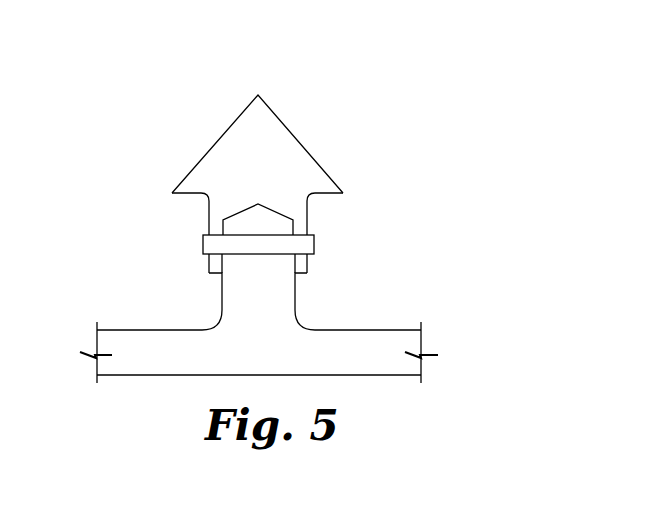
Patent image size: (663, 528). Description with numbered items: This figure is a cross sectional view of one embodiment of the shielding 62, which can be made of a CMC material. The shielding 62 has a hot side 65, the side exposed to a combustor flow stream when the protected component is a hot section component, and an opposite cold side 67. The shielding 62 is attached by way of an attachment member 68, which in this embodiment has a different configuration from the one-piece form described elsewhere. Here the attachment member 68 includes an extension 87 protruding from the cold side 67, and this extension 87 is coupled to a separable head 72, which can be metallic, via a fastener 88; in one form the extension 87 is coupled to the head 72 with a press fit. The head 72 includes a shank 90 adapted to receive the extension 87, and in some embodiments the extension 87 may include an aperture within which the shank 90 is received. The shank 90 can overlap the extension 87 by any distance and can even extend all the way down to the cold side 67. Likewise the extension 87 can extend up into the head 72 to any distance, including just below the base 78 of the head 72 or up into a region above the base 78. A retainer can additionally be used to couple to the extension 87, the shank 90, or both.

The attachment member 68 is at (301, 89).
The head 72 is at (303, 146).
The base 78 is at (179, 196).
The shank 90 is at (308, 217).
The fastener 88 is at (211, 234).
The extension 87 is at (295, 302).
The cold side 67 is at (124, 330).
The shielding 62 is at (333, 376).
The hot side 65 is at (148, 376).